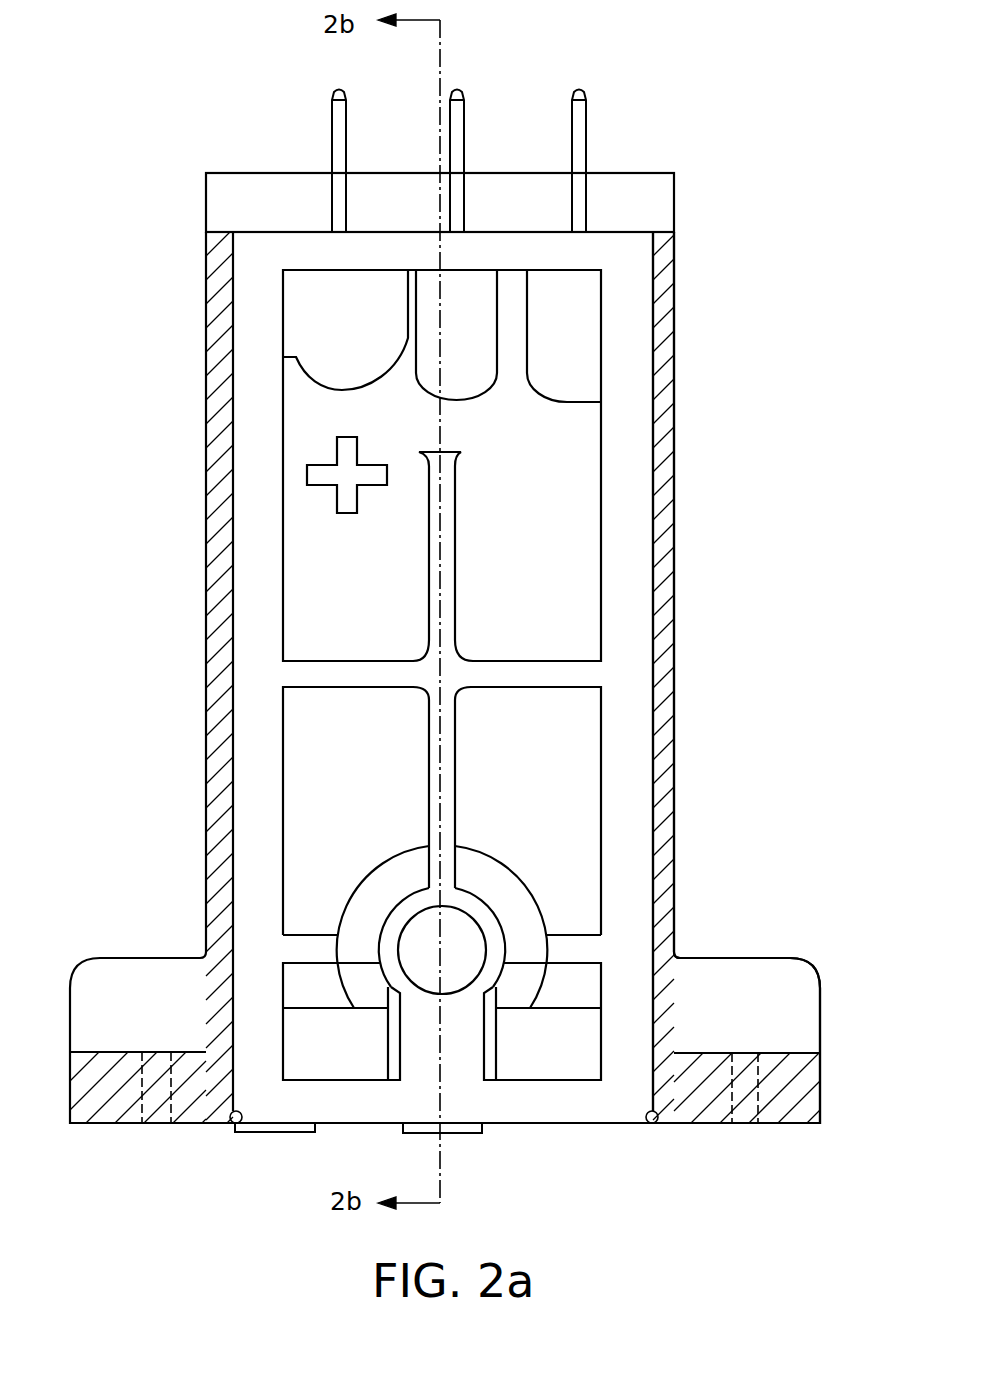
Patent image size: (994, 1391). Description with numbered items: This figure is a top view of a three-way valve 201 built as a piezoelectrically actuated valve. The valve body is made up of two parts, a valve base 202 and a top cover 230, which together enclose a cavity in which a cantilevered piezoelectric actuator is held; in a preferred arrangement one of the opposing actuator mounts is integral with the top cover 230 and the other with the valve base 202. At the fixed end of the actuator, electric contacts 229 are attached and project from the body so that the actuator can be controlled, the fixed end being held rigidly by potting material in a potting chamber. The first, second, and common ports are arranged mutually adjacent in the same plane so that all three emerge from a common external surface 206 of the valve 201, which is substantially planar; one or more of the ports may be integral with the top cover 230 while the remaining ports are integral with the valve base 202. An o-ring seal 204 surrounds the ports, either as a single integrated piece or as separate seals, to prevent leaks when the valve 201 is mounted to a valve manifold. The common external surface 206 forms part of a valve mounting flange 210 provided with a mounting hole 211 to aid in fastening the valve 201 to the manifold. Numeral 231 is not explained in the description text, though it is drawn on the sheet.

The valve 201 is at (184, 341).
The valve base 202 is at (662, 432).
The o-ring seal 204 is at (272, 1132).
The common external surface 206 is at (568, 1123).
The valve mounting flange 210 is at (783, 1093).
The mounting hole 211 is at (743, 1102).
The electric contacts 229 is at (588, 147).
The top cover 230 is at (622, 320).
The top plate 231 is at (675, 205).